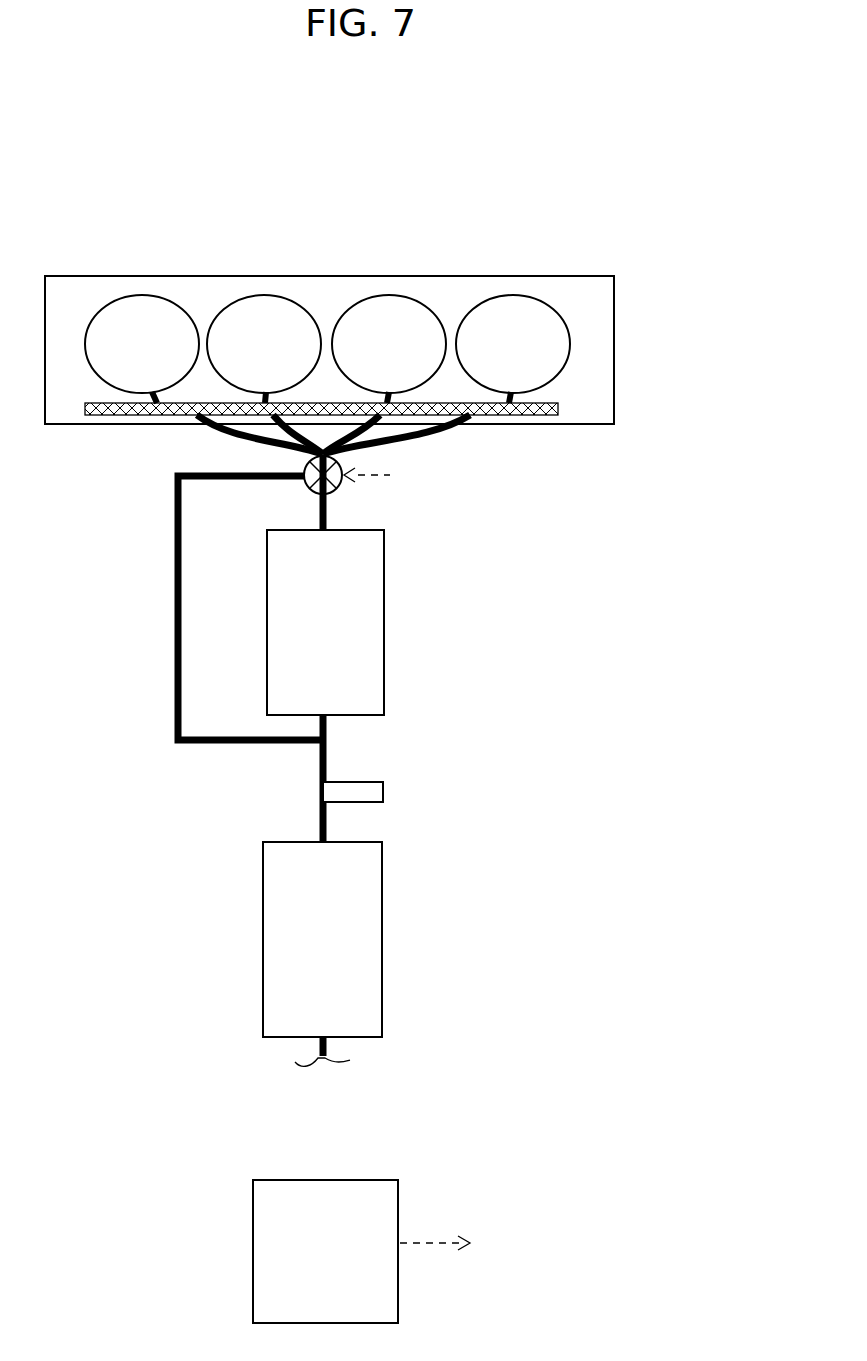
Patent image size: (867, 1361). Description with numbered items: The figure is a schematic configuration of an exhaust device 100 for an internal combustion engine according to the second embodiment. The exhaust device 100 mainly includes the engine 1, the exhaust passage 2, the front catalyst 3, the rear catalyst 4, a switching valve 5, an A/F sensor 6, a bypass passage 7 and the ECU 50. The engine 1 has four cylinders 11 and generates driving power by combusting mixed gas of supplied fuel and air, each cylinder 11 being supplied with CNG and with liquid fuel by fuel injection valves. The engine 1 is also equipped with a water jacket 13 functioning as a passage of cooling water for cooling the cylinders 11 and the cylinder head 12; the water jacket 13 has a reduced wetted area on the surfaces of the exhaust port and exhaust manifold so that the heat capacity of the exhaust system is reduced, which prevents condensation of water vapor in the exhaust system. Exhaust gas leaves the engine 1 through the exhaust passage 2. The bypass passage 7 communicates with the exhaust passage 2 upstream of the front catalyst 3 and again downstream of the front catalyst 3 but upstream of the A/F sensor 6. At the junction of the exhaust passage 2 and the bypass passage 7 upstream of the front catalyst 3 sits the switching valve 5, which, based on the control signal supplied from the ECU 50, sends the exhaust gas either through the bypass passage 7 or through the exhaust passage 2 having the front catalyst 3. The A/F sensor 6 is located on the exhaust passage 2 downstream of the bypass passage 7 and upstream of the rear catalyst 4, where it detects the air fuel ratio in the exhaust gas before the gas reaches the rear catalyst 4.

The exhaust device for an internal combustion engine 100 is at (349, 86).
The engine 1 is at (625, 222).
The cylinders 11 is at (497, 296).
The cylinder head 12 is at (614, 348).
The water jacket 13 is at (538, 415).
The switching valve 5 is at (335, 490).
The bypass passage 7 is at (218, 478).
The exhaust passage 2 is at (327, 768).
The front catalyst 3 is at (384, 622).
The A/F sensor 6 is at (383, 792).
The rear catalyst 4 is at (382, 868).
The ECU 50 is at (327, 1180).